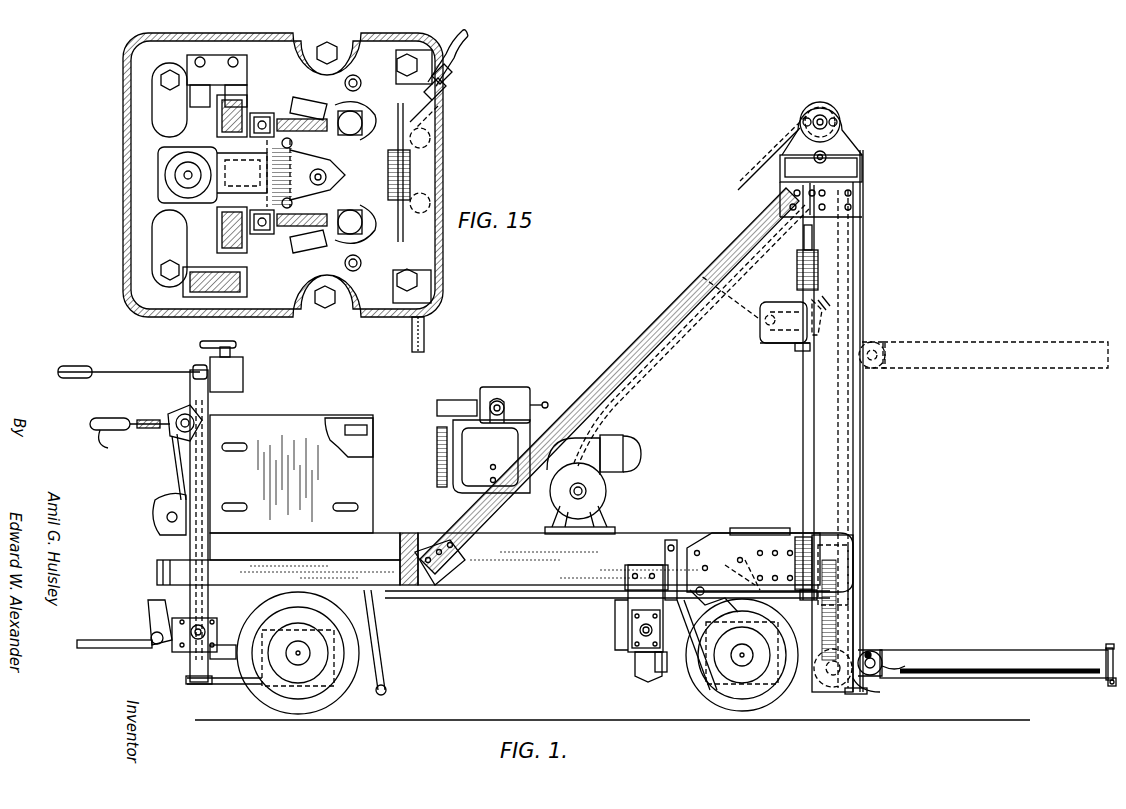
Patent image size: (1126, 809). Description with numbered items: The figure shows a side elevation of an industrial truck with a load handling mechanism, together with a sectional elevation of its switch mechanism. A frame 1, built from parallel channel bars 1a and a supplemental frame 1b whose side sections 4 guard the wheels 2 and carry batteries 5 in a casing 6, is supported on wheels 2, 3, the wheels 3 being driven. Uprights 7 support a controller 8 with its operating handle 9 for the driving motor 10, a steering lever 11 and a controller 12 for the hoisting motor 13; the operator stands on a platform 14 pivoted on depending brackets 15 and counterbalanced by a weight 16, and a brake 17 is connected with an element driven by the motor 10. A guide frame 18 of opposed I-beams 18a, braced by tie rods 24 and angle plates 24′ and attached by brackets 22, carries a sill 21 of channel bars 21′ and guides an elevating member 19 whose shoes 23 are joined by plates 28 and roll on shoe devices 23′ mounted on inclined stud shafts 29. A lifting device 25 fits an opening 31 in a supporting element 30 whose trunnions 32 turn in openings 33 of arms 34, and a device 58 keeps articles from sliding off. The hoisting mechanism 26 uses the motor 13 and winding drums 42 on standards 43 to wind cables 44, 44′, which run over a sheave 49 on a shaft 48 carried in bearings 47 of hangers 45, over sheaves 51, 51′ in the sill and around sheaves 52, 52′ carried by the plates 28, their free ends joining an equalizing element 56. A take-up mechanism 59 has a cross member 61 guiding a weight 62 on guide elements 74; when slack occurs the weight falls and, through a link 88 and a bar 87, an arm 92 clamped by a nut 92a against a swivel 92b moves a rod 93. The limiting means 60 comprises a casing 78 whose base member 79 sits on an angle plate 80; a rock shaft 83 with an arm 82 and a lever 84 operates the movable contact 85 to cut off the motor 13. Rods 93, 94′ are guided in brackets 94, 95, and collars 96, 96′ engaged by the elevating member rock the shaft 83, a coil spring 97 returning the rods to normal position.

In FIG. 1, the frame 1 is at (409, 549).
In FIG. 1, the parallel channel bars 1a is at (607, 565).
In FIG. 1, the supplemental frame 1b is at (282, 548).
In FIG. 1, the wheels 2 is at (337, 690).
In FIG. 1, the wheels 3 is at (700, 696).
In FIG. 1, the side sections 4 is at (342, 548).
In FIG. 1, the batteries 5 is at (362, 440).
In FIG. 1, the casing 6 is at (303, 424).
In FIG. 1, the uprights 7 is at (190, 548).
In FIG. 1, the controller 8 is at (243, 376).
In FIG. 1, the operating handle 9 is at (130, 441).
In FIG. 1, the traction or driving motor 10 is at (636, 662).
In FIG. 1, the steering lever 11 is at (145, 372).
In FIG. 1, the controller 12 is at (176, 417).
In FIG. 1, the hoisting or elevating motor 13 is at (492, 440).
In FIG. 1, the platform 14 is at (112, 641).
In FIG. 1, the depending brackets 15 is at (214, 626).
In FIG. 1, the weight 16 is at (152, 612).
In FIG. 1, the brake 17 is at (620, 605).
In FIG. 1, the guide frame 18 is at (863, 455).
In FIG. 1, the channel or I-beams 18a is at (863, 420).
In FIG. 1, the elevating member 19 is at (862, 330).
In FIG. 1, the sill 21 is at (828, 157).
In FIG. 1, the channel bars 21′ is at (780, 168).
In FIG. 1, the brackets 22 is at (722, 540).
In FIG. 1, the shoes 23 is at (853, 582).
In FIG. 1, the shoe devices 23′ is at (853, 545).
In FIG. 1, the tie rods 24 is at (655, 352).
In FIG. 1, the angle plates 24′ is at (780, 195).
In FIG. 1, the lifting device 25 is at (990, 344).
In FIG. 1, the hoisting or elevating mechanism 26 is at (850, 121).
In FIG. 1, the front and rear plates 28 is at (845, 592).
In FIG. 1, the stud shaft 29 is at (848, 522).
In FIG. 1, the supporting element 30 is at (878, 680).
In FIG. 1, the opening 31 is at (884, 661).
In FIG. 1, the trunnions 32 is at (886, 360).
In FIG. 1, the openings 33 is at (874, 656).
In FIG. 1, the forwardly projecting arms 34 is at (870, 368).
In FIG. 1, the winding drums 42 is at (606, 488).
In FIG. 1, the standards 43 is at (612, 524).
In FIG. 1, the flexible member 44 is at (610, 404).
In FIG. 1, the flexible member 44′ is at (850, 310).
In FIG. 1, the hangers 45 is at (790, 140).
In FIG. 1, the bearings 47 is at (804, 118).
In FIG. 1, the shaft 48 is at (820, 115).
In FIG. 1, the sheave 49 is at (835, 108).
In FIG. 1, the sheave 51 is at (845, 135).
In FIG. 1, the sheave 51′ is at (800, 124).
In FIG. 1, the sheave 52 is at (860, 610).
In FIG. 1, the sheave 52′ is at (870, 625).
In FIG. 1, the equalizing element 56 is at (775, 213).
In FIG. 1, the device 58 is at (1106, 683).
In FIG. 1, the take-up mechanism 59 is at (786, 270).
In FIG. 15, the limiting means 60 is at (215, 175).
In FIG. 1, the limiting means 60 is at (768, 322).
In FIG. 1, the cross member 61 is at (797, 282).
In FIG. 1, the weight 62 is at (803, 254).
In FIG. 1, the guide elements 74 is at (740, 245).
In FIG. 15, the casing 78 is at (125, 96).
In FIG. 1, the casing 78 is at (775, 345).
In FIG. 15, the base member 79 is at (140, 258).
In FIG. 1, the angle plate 80 is at (800, 352).
In FIG. 15, the arm 82 is at (440, 167).
In FIG. 1, the arm 82 is at (762, 338).
In FIG. 15, the rock shaft 83 is at (182, 178).
In FIG. 1, the rock shaft 83 is at (775, 312).
In FIG. 15, the lever 84 is at (215, 195).
In FIG. 15, the movable contact 85 is at (262, 112).
In FIG. 15, the bar 87 is at (210, 105).
In FIG. 1, the bar 87 is at (826, 348).
In FIG. 1, the link 88 is at (822, 302).
In FIG. 15, the arm 92 is at (462, 82).
In FIG. 15, the nut 92a is at (455, 72).
In FIG. 15, the swivel 92b is at (450, 106).
In FIG. 1, the swivel 92b is at (720, 275).
In FIG. 15, the rod 93 is at (470, 38).
In FIG. 1, the rod 93 is at (800, 230).
In FIG. 1, the bracket 94 is at (830, 195).
In FIG. 15, the rod 94′ is at (426, 334).
In FIG. 1, the rod 94′ is at (803, 452).
In FIG. 1, the bracket 95 is at (722, 605).
In FIG. 1, the collar 96 is at (848, 226).
In FIG. 1, the collar 96′ is at (782, 538).
In FIG. 1, the coil spring 97 is at (795, 565).